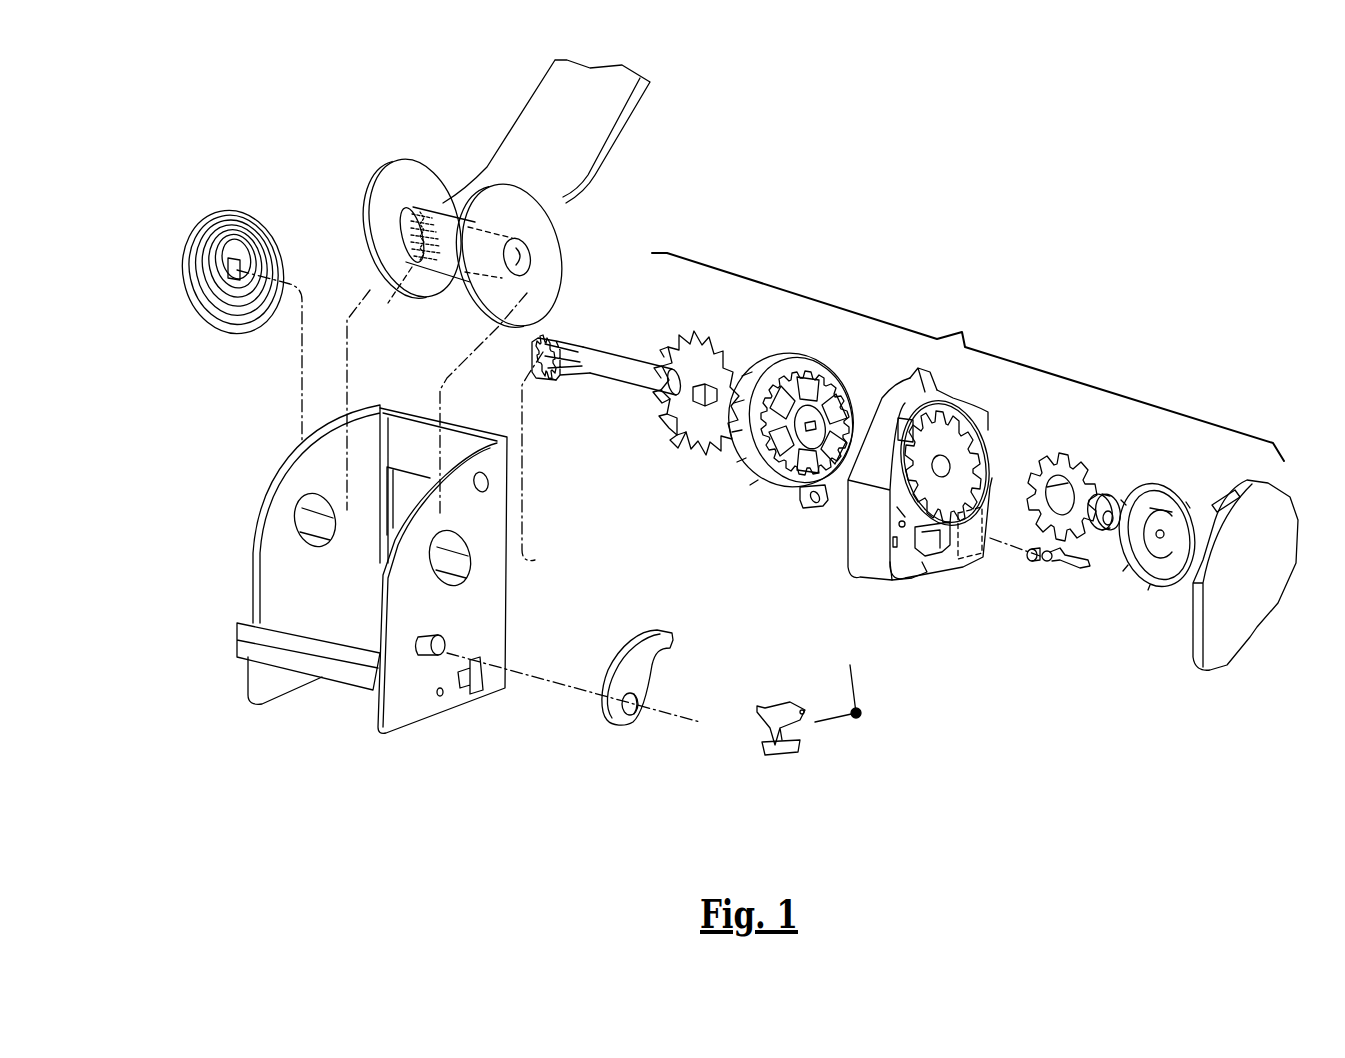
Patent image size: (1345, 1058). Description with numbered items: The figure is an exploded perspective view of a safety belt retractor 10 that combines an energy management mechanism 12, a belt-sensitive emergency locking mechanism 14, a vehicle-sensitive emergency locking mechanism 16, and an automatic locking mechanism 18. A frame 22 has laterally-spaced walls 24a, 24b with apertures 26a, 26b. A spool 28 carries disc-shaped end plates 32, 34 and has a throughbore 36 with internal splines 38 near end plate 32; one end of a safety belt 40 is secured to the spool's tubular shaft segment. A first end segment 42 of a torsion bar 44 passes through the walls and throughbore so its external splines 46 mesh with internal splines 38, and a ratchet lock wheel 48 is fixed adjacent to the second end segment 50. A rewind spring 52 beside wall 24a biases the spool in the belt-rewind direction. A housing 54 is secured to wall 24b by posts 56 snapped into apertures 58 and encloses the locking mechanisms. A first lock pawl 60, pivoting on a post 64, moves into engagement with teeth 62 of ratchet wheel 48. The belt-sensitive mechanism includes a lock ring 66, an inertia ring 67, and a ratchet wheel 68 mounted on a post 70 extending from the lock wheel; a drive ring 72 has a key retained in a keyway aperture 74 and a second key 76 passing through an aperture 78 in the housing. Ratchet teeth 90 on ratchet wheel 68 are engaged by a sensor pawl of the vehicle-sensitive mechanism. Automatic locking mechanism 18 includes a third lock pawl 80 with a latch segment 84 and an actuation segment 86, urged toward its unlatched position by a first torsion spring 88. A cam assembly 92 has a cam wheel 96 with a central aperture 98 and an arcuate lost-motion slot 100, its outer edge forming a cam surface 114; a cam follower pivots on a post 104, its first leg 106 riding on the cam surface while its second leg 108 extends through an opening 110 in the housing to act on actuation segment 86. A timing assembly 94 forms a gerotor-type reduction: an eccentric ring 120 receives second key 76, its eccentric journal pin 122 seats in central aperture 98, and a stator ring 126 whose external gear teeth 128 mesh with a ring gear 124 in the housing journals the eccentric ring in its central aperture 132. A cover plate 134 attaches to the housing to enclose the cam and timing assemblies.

The safety belt retractor 10 is at (968, 357).
The energy management mechanism 12 is at (575, 293).
The belt-sensitive emergency locking mechanism 14 is at (801, 411).
The vehicle-sensitive emergency locking mechanism 16 is at (968, 554).
The automatic locking mechanism 18 is at (1078, 501).
The frame 22 is at (468, 589).
The wall 24a is at (312, 570).
The wall 24b is at (471, 590).
The aperture 26a is at (318, 547).
The aperture 26b is at (455, 580).
The spool 28 is at (483, 314).
The end plate 32 is at (422, 176).
The end plate 34 is at (548, 222).
The throughbore 36 is at (525, 257).
The internal splines 38 is at (379, 388).
The safety belt 40 is at (613, 100).
The first end segment 42 is at (556, 347).
The torsion bar 44 is at (607, 357).
The external splines 46 is at (555, 378).
The ratchet lock wheel 48 is at (668, 399).
The second end segment 50 is at (677, 443).
The rewind spring 52 is at (242, 213).
The housing 54 is at (922, 513).
The posts 56 is at (930, 388).
The apertures 58 is at (489, 482).
The first lock pawl 60 is at (632, 668).
The teeth 62 is at (663, 413).
The post 64 is at (428, 635).
The lock ring 66 is at (787, 365).
The inertia ring 67 is at (815, 383).
The ratchet wheel 68 is at (836, 376).
The post 70 is at (705, 386).
The drive ring 72 is at (790, 452).
The keyway aperture 74 is at (715, 410).
The second key 76 is at (815, 428).
The aperture 78 is at (948, 462).
The third lock pawl 80 is at (756, 715).
The latch segment 84 is at (762, 717).
The actuation segment 86 is at (790, 754).
The first torsion spring 88 is at (853, 690).
The ratchet teeth 90 is at (757, 452).
The cam assembly 92 is at (1200, 527).
The timing assembly 94 is at (1075, 441).
The cam wheel 96 is at (1188, 492).
The central aperture 98 is at (1227, 485).
The arcuate lost-motion slot 100 is at (1163, 534).
The post 104 is at (1028, 558).
The first leg 106 is at (1064, 556).
The second leg 108 is at (1085, 572).
The opening 110 is at (928, 548).
The cam surface 114 is at (1123, 578).
The eccentric ring 120 is at (1110, 503).
The eccentric journal pin 122 is at (1160, 532).
The ring gear 124 is at (970, 412).
The stator ring 126 is at (1073, 470).
The external gear teeth 128 is at (1072, 476).
The central aperture 132 is at (1104, 516).
The cover plate 134 is at (1223, 577).